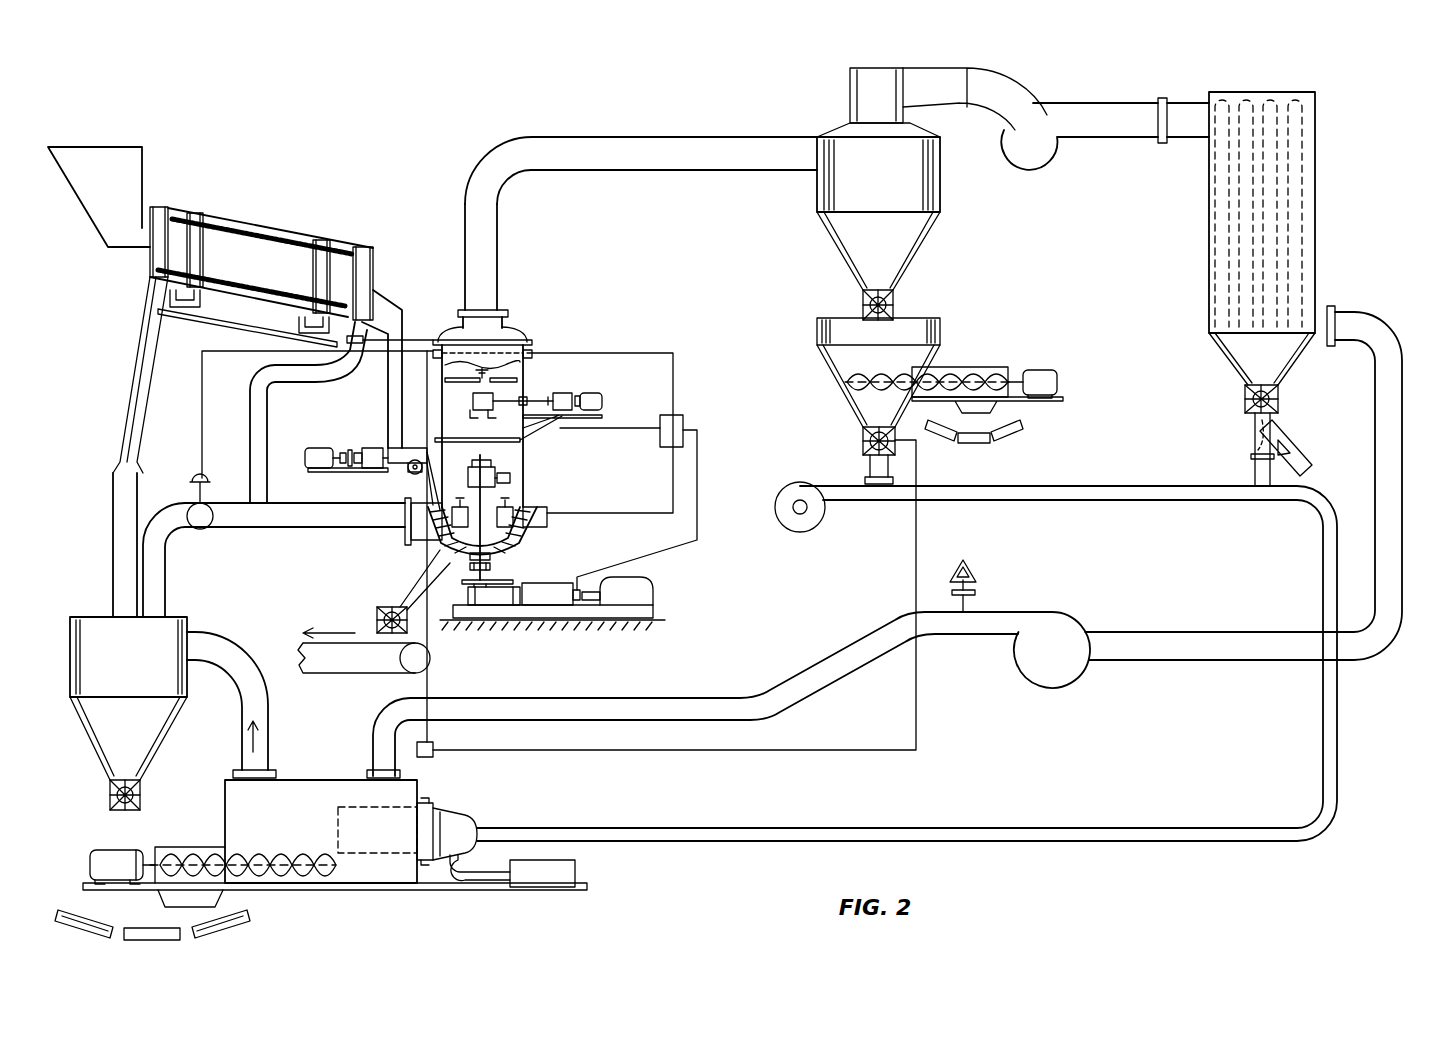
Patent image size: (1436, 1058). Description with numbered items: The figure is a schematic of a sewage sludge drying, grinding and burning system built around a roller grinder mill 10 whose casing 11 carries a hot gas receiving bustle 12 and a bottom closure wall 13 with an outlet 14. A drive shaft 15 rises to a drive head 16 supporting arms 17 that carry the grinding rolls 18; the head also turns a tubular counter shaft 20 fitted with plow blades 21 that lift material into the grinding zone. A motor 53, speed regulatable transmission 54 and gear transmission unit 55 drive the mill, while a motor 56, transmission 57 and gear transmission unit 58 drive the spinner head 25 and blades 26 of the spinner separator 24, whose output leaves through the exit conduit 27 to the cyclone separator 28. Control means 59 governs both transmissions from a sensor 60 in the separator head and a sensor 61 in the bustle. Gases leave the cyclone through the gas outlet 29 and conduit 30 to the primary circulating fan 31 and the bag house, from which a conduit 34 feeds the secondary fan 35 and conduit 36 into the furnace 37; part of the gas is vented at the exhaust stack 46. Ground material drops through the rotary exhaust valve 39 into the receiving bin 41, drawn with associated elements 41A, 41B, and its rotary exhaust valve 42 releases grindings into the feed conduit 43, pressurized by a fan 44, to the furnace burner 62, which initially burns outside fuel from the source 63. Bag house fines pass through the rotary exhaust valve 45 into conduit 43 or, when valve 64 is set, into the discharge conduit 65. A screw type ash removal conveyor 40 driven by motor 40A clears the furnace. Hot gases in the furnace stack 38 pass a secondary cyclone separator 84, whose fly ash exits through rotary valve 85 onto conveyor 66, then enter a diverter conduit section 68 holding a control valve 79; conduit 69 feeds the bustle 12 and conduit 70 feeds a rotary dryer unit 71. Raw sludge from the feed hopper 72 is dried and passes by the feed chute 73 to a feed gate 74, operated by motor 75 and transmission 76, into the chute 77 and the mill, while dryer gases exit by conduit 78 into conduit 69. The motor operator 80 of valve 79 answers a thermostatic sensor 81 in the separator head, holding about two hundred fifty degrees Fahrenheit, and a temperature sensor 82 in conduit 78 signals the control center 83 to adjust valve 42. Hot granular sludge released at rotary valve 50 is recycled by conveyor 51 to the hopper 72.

The roller grinder mill 10 is at (575, 470).
The casing 11 is at (521, 441).
The bustle 12 is at (548, 523).
The bottom closure wall 13 is at (492, 557).
The outlet 14 is at (468, 566).
The drive shaft 15 is at (490, 567).
The drive head 16 is at (472, 466).
The arms 17 is at (440, 505).
The grinding rolls 18 is at (514, 512).
The tubular counter shaft 20 is at (510, 478).
The plow blades 21 is at (440, 549).
The spinner separator 24 is at (448, 297).
The spinner head 25 is at (486, 372).
The blades 26 is at (442, 385).
The exit conduit 27 is at (655, 160).
The cyclone separator 28 is at (838, 195).
The gas outlet 29 is at (858, 88).
The conduit 30 is at (942, 78).
The primary circulating fan 31 is at (1036, 191).
The conduit 34 is at (1365, 332).
The secondary fan 35 is at (1114, 607).
The conduit 36 is at (849, 685).
The furnace 37 is at (338, 782).
The furnace stack 38 is at (270, 735).
The rotary exhaust valve 39 is at (895, 299).
The screw type ash removal conveyor 40 is at (270, 850).
The motor 40A is at (118, 852).
The ground material receiving bin 41 is at (925, 360).
The screw conveyor 41A is at (985, 368).
The motor 41B is at (1052, 373).
The rotary exhaust valve 42 is at (863, 447).
The feed conduit 43 is at (1140, 505).
The fan 44 is at (832, 529).
The bag house rotary exhaust valve 45 is at (1245, 401).
The exhaust stack 46 is at (978, 598).
The rotary valve 50 is at (377, 618).
The conveyor 51 is at (358, 637).
The motor 53 is at (656, 593).
The speed regulatable transmission 54 is at (552, 620).
The gear transmission unit 55 is at (494, 612).
The motor 56 is at (598, 398).
The speed regulatable transmission 57 is at (562, 396).
The gear transmission unit 58 is at (478, 405).
The control means 59 is at (683, 418).
The sensor 60 is at (530, 338).
The sensor 61 is at (548, 513).
The furnace burner 62 is at (470, 812).
The source 63 is at (556, 888).
The valve 64 is at (1252, 443).
The discharge conduit 65 is at (1295, 442).
The conveyor 66 is at (240, 928).
The diverter conduit section 68 is at (113, 520).
The conduit 69 is at (315, 529).
The conduit 70 is at (122, 370).
The rotary dryer unit 71 is at (267, 209).
The feed hopper 72 is at (122, 158).
The feed chute 73 is at (382, 290).
The feed gate 74 is at (408, 471).
The motor 75 is at (318, 459).
The speed controllable transmission 76 is at (372, 470).
The chute 77 is at (414, 467).
The conduit 78 is at (252, 383).
The control valve 79 is at (208, 530).
The motor operator 80 is at (204, 478).
The thermostatic sensor 81 is at (452, 335).
The temperature sensor 82 is at (353, 343).
The control center 83 is at (435, 756).
The secondary cyclone separator 84 is at (145, 632).
The rotary valve 85 is at (110, 800).